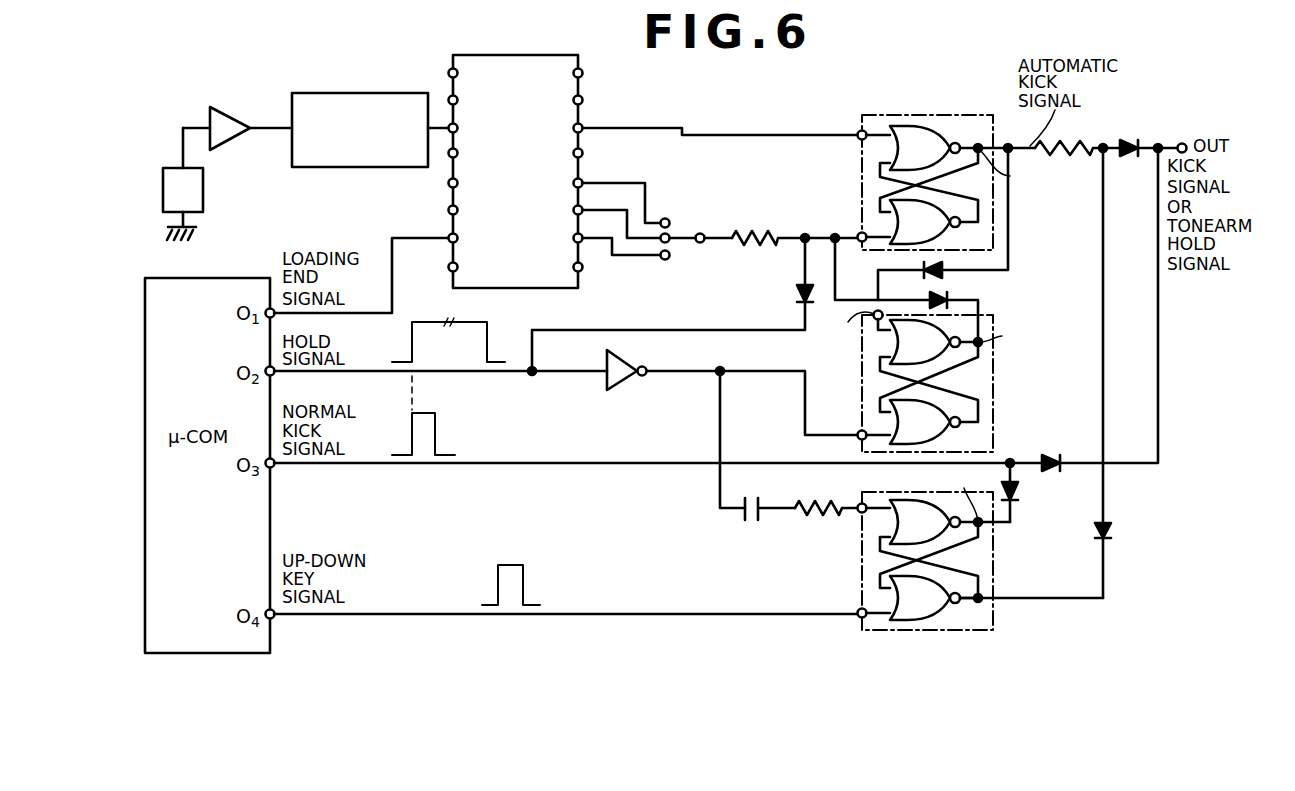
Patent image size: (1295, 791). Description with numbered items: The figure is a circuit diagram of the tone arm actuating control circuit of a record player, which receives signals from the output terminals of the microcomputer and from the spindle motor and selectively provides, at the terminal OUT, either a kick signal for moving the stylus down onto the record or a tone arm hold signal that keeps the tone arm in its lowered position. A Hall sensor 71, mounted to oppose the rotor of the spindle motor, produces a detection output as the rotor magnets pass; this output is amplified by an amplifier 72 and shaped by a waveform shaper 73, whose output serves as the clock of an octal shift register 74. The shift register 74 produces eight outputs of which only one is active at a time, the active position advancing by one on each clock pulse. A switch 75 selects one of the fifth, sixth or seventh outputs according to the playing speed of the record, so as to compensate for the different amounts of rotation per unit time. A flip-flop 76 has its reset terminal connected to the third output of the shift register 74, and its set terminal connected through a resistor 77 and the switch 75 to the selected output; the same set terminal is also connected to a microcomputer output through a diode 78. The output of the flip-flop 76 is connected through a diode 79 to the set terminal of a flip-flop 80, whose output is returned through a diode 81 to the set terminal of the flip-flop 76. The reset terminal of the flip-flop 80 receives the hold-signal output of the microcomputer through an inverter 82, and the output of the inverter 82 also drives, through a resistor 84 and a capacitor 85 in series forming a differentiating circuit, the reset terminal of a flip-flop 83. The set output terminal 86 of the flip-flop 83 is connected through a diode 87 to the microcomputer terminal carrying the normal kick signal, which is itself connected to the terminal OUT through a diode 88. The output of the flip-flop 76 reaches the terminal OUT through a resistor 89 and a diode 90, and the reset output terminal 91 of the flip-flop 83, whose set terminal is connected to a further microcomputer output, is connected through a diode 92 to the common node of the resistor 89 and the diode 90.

The Hall sensor 71 is at (203, 183).
The amplifier 72 is at (229, 117).
The waveform shaper 73 is at (350, 93).
The octal shift register 74 is at (462, 55).
The switch 75 is at (689, 238).
The flip-flop 76 is at (950, 115).
The resistor 77 is at (752, 236).
The diode 78 is at (797, 293).
The diode 79 is at (945, 274).
The flip-flop 80 is at (993, 400).
The diode 81 is at (952, 303).
The inverter 82 is at (625, 386).
The flip-flop 83 is at (993, 580).
The resistor 84 is at (823, 521).
The capacitor 85 is at (748, 523).
The set output terminal 86 is at (1000, 522).
The diode 87 is at (1015, 489).
The diode 88 is at (1052, 454).
The resistor 89 is at (1062, 153).
The diode 90 is at (1126, 140).
The reset output terminal 91 is at (1005, 600).
The diode 92 is at (1110, 530).